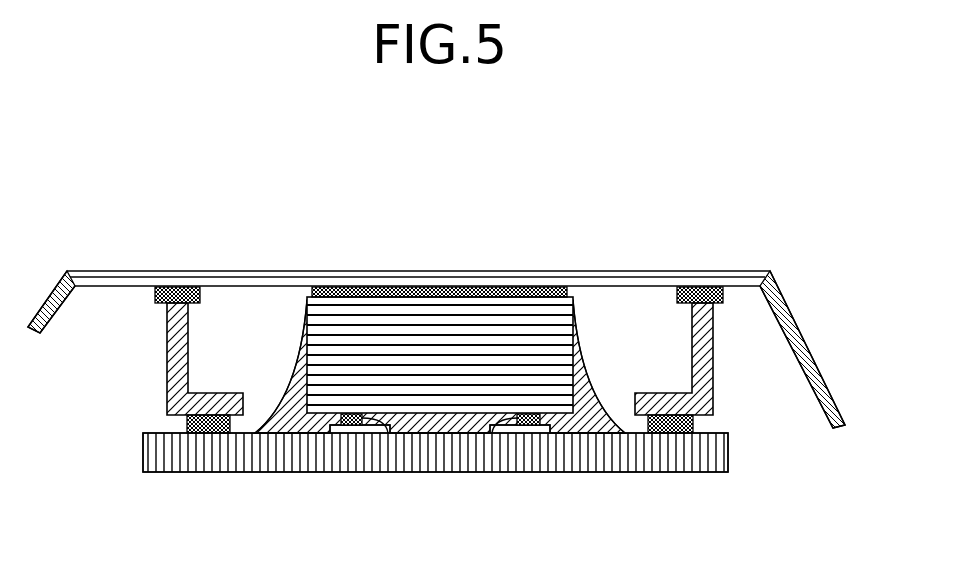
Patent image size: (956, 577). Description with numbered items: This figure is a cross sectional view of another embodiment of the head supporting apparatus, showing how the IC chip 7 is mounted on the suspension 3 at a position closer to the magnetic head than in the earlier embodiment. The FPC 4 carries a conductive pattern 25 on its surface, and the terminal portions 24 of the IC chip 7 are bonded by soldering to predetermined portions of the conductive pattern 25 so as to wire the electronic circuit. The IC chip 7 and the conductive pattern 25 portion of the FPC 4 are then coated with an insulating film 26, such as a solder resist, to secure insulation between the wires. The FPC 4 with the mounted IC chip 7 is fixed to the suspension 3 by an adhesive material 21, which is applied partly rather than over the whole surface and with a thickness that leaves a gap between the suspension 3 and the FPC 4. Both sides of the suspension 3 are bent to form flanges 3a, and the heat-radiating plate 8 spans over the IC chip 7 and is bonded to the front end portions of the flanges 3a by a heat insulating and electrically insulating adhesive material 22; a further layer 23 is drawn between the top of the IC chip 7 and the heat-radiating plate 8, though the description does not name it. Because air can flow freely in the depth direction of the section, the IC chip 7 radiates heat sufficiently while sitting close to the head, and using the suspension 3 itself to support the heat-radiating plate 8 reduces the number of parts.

The suspension 3 is at (714, 400).
The flanges 3a is at (167, 367).
The FPC 4 is at (255, 450).
The IC chip 7 is at (505, 348).
The heat-radiating plate 8 is at (623, 282).
The adhesive material 21 is at (200, 436).
The heat insulating and electrical insulating adhesive material 22 is at (181, 290).
The top electrode layer 23 is at (395, 290).
The terminal portions 24 is at (385, 428).
The conductive pattern 25 is at (350, 426).
The insulating film 26 is at (604, 420).